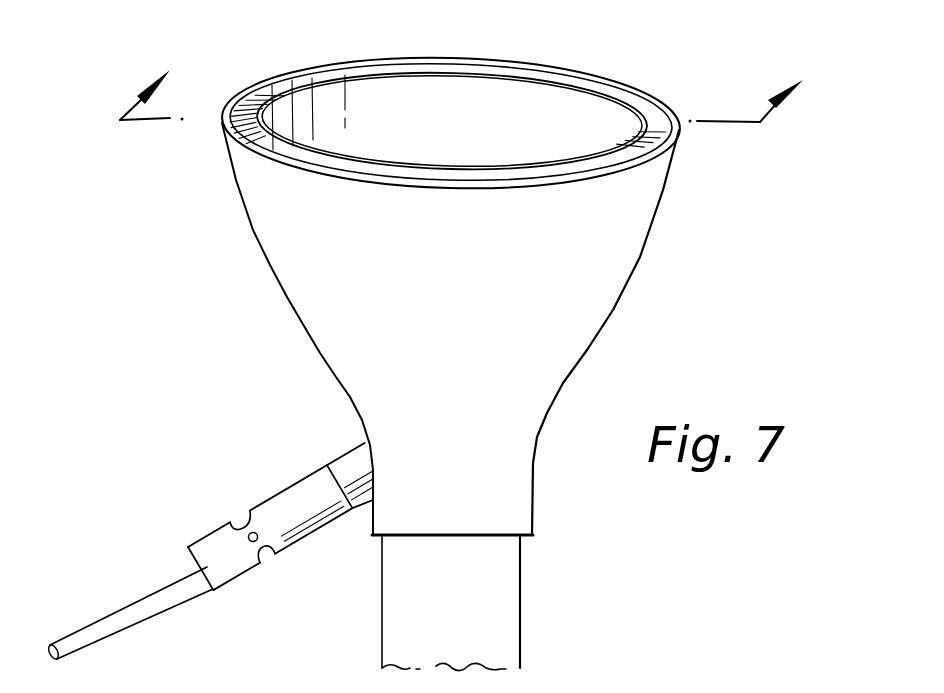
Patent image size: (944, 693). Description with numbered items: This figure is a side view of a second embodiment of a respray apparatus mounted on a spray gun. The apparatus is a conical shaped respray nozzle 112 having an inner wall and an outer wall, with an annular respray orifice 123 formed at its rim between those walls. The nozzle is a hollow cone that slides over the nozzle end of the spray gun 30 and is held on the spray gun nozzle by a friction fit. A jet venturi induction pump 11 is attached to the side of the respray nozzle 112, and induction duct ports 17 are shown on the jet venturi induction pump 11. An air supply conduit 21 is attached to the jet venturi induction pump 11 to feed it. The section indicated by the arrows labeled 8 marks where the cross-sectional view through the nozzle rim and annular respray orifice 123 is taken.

The conical shaped respray nozzle 112 is at (253, 231).
The annular respray orifice 123 is at (273, 93).
The section line 8- 8 is at (465, 93).
The spray gun 30 is at (512, 584).
The jet venturi induction pump 11 is at (297, 487).
The induction duct ports 17 is at (243, 518).
The air supply conduit 21 is at (143, 594).